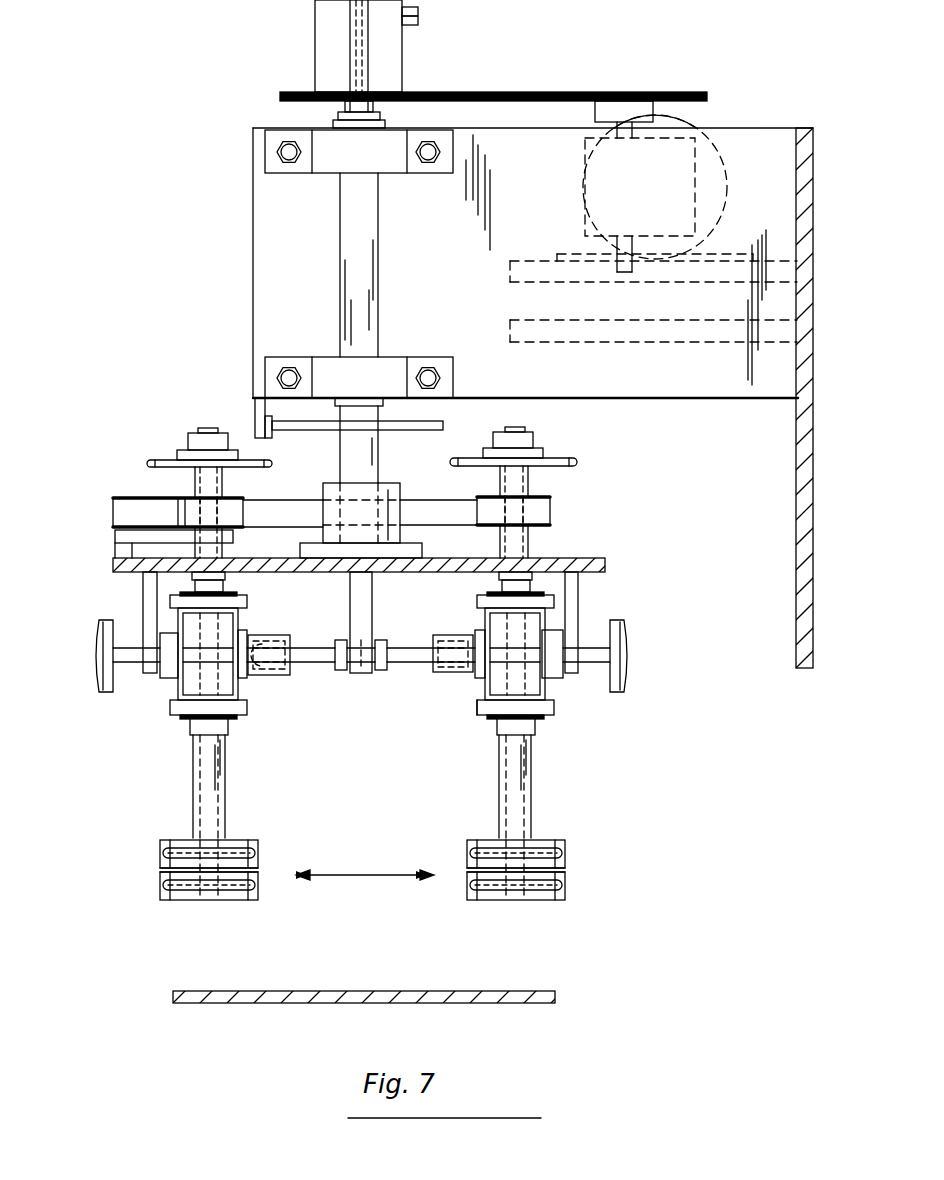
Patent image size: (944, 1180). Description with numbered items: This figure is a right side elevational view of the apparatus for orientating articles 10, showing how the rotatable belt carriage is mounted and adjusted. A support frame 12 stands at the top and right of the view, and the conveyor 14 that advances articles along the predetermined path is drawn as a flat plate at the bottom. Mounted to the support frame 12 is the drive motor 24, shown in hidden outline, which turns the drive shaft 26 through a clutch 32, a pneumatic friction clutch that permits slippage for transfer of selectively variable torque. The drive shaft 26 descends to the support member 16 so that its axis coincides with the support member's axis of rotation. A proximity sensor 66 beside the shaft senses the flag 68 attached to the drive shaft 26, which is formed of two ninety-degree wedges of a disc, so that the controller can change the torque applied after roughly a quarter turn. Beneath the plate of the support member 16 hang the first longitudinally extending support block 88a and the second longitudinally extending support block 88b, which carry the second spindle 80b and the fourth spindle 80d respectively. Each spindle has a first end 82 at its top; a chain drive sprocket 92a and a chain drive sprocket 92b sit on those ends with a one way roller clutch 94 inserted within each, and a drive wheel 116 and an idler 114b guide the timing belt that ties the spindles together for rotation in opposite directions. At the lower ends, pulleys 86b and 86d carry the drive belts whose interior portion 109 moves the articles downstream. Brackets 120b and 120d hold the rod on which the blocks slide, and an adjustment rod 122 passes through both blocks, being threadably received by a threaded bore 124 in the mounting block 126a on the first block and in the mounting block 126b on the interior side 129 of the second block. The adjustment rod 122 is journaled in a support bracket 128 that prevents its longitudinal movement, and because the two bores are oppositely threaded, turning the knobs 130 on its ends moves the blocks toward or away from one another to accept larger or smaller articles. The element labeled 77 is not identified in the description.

The apparatus for orientating articles 10 is at (105, 390).
The support frame 12 is at (795, 580).
The conveyor 14 is at (545, 990).
The support member 16 is at (600, 574).
The drive motor 24 is at (633, 122).
The drive shaft 26 is at (372, 253).
The clutch 32 is at (393, 48).
The proximity sensor 66 is at (258, 430).
The flag 68 is at (443, 423).
The pivot 77 is at (243, 622).
The second spindle 80b is at (205, 787).
The fourth spindle 80d is at (527, 780).
The first end 82 is at (202, 430).
The pulley 86b is at (185, 838).
The pulley 86d is at (540, 835).
The first longitudinally extending support block 88a is at (178, 690).
The second longitudinally extending support block 88b is at (548, 685).
The chain drive sprocket 92a is at (143, 462).
The chain drive sprocket 92b is at (577, 463).
The one way roller clutch 94 is at (182, 448).
The interior portion 109 is at (258, 845).
The idler 114b is at (118, 513).
The drive wheel 116 is at (545, 488).
The bracket 120b is at (143, 598).
The bracket 120d is at (580, 603).
The adjustment rod 122 is at (413, 664).
The threaded bore 124 is at (268, 626).
The mounting block 126a is at (268, 676).
The mounting block 126b is at (453, 668).
The support bracket 128 is at (367, 676).
The interior side 129 is at (477, 697).
The knob 130 is at (93, 652).